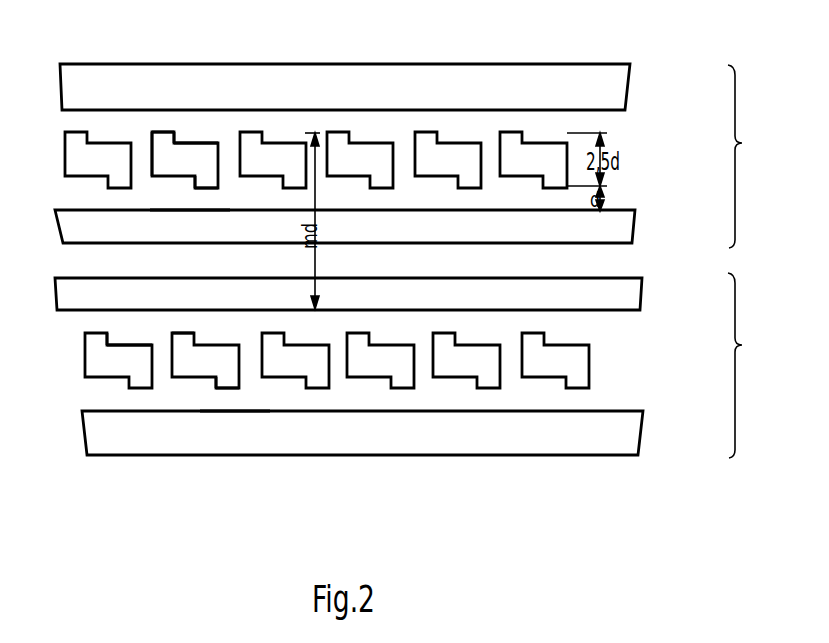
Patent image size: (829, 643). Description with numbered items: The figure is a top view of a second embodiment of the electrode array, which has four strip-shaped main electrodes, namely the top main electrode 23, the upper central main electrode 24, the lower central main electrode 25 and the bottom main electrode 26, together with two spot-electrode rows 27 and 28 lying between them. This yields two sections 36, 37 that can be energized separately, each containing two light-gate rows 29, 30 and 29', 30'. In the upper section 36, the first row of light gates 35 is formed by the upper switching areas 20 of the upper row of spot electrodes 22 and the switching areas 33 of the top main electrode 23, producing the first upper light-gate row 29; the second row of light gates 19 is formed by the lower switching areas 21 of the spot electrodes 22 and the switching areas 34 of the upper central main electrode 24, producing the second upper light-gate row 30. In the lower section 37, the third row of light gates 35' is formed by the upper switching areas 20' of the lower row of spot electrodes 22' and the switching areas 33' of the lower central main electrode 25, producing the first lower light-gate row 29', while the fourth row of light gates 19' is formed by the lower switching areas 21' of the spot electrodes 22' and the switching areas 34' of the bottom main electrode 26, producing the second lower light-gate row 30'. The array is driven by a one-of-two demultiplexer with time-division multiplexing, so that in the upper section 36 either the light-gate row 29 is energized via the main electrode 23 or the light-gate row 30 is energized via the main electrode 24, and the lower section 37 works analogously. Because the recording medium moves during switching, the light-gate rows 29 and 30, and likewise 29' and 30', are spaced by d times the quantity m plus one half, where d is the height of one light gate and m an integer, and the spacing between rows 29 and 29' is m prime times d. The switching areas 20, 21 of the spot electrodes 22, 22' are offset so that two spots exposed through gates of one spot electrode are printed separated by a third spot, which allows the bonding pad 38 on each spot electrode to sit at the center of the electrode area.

The second row of light gates 19 is at (119, 234).
The upper switching areas 20 is at (189, 86).
The lower switching areas 21 is at (107, 216).
The spot electrodes 22 is at (316, 107).
The top main electrode 23 is at (617, 83).
The upper central main electrode 24 is at (622, 228).
The lower central main electrode 25 is at (633, 292).
The bottom main electrode 26 is at (627, 437).
The spot-electrode row 27 is at (625, 157).
The spot-electrode row 28 is at (598, 360).
The first upper light-gate row 29 is at (625, 123).
The second upper light-gate row 30 is at (652, 197).
The switching areas 33 is at (154, 84).
The switching areas 34 is at (125, 257).
The first row of light gates 35 is at (165, 79).
The upper section 36 is at (748, 156).
The lower section 37 is at (748, 365).
The bonding pad 38 is at (158, 140).
The fourth row of light gates 19' is at (228, 460).
The upper switching areas 20' is at (110, 373).
The lower switching areas 21' is at (201, 440).
The spot electrodes 22' is at (337, 433).
The first lower light-gate row 29' is at (654, 322).
The second lower light-gate row 30' is at (654, 397).
The switching areas 33' is at (87, 340).
The switching areas 34' is at (241, 457).
The third row of light gates 35' is at (90, 368).